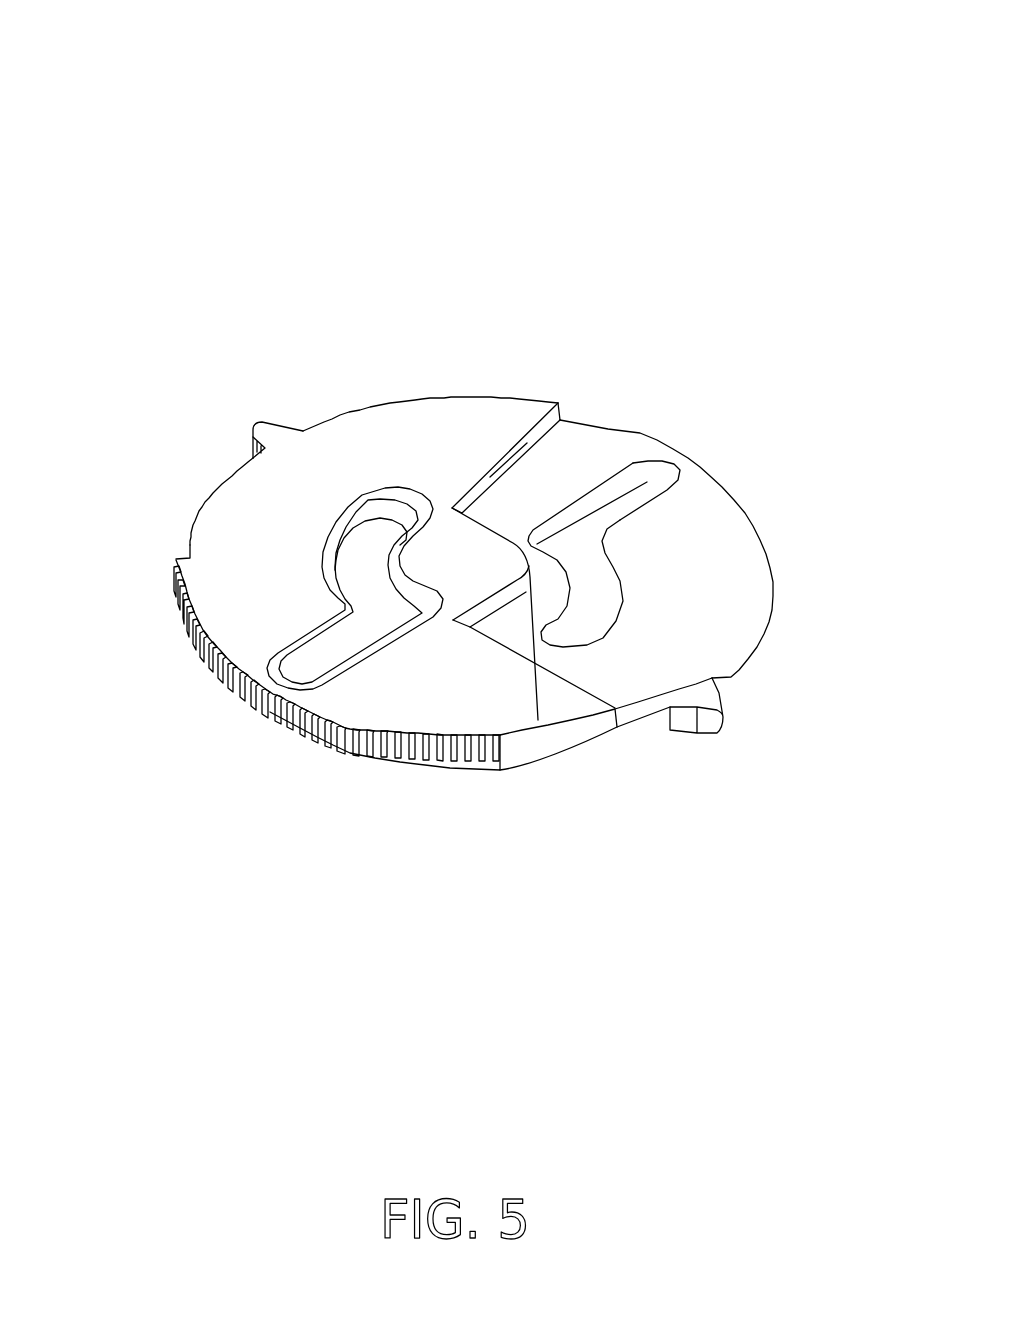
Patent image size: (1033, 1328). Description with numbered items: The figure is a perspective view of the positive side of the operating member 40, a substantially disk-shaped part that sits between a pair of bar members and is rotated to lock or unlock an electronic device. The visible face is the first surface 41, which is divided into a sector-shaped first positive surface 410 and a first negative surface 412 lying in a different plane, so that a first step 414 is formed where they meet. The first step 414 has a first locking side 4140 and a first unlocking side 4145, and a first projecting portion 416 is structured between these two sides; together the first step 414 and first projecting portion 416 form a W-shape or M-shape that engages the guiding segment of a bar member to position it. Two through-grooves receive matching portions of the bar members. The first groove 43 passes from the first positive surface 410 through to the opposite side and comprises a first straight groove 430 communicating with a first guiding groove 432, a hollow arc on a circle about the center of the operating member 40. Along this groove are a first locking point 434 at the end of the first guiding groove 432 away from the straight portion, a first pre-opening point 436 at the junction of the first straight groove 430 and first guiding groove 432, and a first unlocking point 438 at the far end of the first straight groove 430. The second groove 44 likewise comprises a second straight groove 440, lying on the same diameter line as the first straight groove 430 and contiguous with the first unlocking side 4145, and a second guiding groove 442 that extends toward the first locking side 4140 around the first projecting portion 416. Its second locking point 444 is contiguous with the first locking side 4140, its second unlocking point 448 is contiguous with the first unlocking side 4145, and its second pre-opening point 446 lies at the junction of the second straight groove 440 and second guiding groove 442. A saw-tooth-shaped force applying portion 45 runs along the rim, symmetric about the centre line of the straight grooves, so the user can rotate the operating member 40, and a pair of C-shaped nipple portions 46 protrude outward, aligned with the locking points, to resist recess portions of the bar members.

The operating member 40 is at (498, 42).
The first surface 41 is at (613, 320).
The first positive surface 410 is at (492, 425).
The first negative surface 412 is at (573, 432).
The first step 414 is at (530, 448).
The first unlocking side 4145 is at (490, 477).
The first projecting portion 416 is at (538, 720).
The first locking side 4140 is at (617, 727).
The first groove 43 is at (186, 804).
The first straight groove 430 is at (323, 670).
The first guiding groove 432 is at (363, 557).
The first locking point 434 is at (395, 523).
The first pre-opening point 436 is at (377, 635).
The first unlocking point 438 is at (288, 680).
The second groove 44 is at (838, 497).
The second straight groove 440 is at (613, 510).
The second guiding groove 442 is at (594, 598).
The second locking point 444 is at (558, 643).
The second pre-opening point 446 is at (573, 543).
The second unlocking point 448 is at (662, 483).
The force applying portion 45 is at (225, 685).
The nipple portion 46 is at (262, 425).